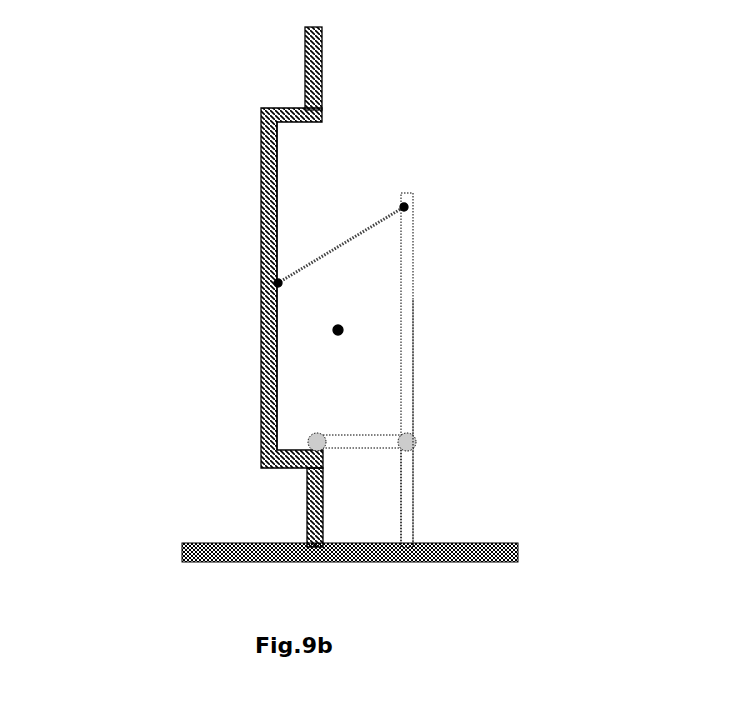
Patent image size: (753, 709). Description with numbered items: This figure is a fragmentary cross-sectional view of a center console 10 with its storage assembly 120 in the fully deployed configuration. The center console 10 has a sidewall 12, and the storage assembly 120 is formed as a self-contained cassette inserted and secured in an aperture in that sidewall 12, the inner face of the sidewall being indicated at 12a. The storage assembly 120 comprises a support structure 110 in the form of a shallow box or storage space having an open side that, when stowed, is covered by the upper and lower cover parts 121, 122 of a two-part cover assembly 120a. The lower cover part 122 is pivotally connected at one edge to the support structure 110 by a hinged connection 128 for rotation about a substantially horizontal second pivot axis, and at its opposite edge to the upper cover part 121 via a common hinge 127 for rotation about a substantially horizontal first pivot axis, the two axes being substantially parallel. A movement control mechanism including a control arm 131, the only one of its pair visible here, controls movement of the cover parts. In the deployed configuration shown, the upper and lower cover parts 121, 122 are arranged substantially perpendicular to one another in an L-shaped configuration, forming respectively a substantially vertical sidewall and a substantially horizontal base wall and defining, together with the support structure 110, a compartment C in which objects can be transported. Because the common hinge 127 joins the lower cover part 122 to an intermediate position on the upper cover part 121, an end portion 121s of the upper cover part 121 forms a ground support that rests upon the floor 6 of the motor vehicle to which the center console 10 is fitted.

The floor 6 is at (237, 548).
The center console 10 is at (322, 47).
The sidewall 12 is at (322, 88).
The inner face of frame member 12a is at (258, 255).
The support structure 110 is at (260, 180).
The storage assembly 120 is at (424, 339).
The two-part cover assembly 120a is at (452, 335).
The upper cover part 121 is at (413, 295).
The end portion of the upper cover part 121s is at (413, 525).
The lower cover part 122 is at (362, 413).
The common hinge 127 is at (412, 440).
The hinged connection 128 is at (307, 438).
The control arm 131 is at (358, 237).
The compartment C is at (333, 330).